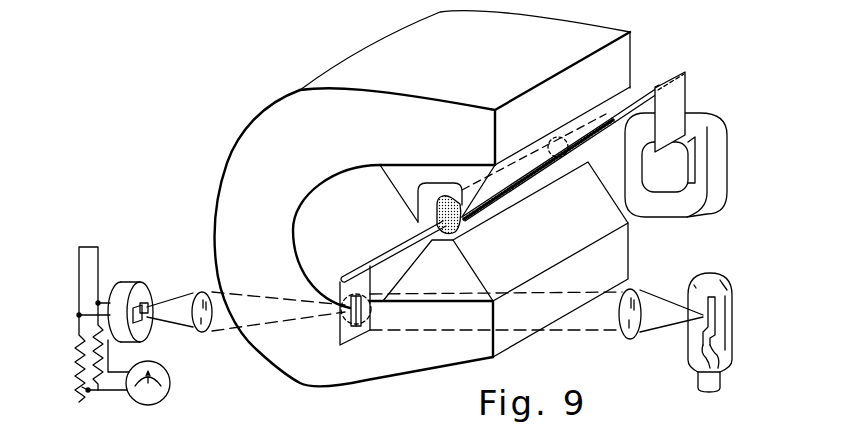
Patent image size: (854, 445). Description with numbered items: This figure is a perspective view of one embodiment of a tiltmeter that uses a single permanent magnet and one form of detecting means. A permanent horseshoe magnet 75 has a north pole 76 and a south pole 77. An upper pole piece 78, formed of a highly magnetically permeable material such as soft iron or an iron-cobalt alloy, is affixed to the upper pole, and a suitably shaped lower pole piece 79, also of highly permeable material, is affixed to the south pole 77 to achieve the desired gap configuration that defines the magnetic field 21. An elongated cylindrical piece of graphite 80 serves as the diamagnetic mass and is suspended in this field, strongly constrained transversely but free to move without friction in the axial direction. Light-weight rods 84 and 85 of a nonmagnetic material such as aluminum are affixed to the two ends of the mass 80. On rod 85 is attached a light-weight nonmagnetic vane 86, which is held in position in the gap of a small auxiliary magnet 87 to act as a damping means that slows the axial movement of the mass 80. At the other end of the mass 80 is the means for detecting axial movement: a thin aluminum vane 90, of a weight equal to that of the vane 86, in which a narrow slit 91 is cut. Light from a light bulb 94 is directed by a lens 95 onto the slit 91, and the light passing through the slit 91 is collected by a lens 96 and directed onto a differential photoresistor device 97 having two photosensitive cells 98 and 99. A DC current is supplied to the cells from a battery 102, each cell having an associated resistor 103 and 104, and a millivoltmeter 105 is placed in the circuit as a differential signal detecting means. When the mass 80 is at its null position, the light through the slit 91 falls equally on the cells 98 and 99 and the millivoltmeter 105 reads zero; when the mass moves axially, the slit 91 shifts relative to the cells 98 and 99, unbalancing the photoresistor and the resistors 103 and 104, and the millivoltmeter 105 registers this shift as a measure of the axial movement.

The magnetic field 21 is at (437, 198).
The permanent horseshoe magnet 75 is at (235, 180).
The north pole 76 is at (394, 131).
The south pole 77 is at (377, 365).
The upper pole piece 78 is at (538, 157).
The lower pole piece 79 is at (452, 267).
The graphite mass 80 is at (512, 197).
The rod 84 is at (395, 245).
The rod 85 is at (645, 93).
The vane 86 is at (678, 92).
The auxiliary magnet 87 is at (714, 126).
The vane 90 is at (343, 335).
The slit 91 is at (358, 328).
The light bulb 94 is at (723, 313).
The lens 95 is at (628, 337).
The lens 96 is at (200, 337).
The differential photoresistor device 97 is at (153, 288).
The photosensitive cell 98 is at (135, 307).
The photosensitive cell 99 is at (145, 305).
The battery 102 is at (92, 258).
The resistor 103 is at (80, 385).
The resistor 104 is at (95, 368).
The millivoltmeter 105 is at (155, 397).